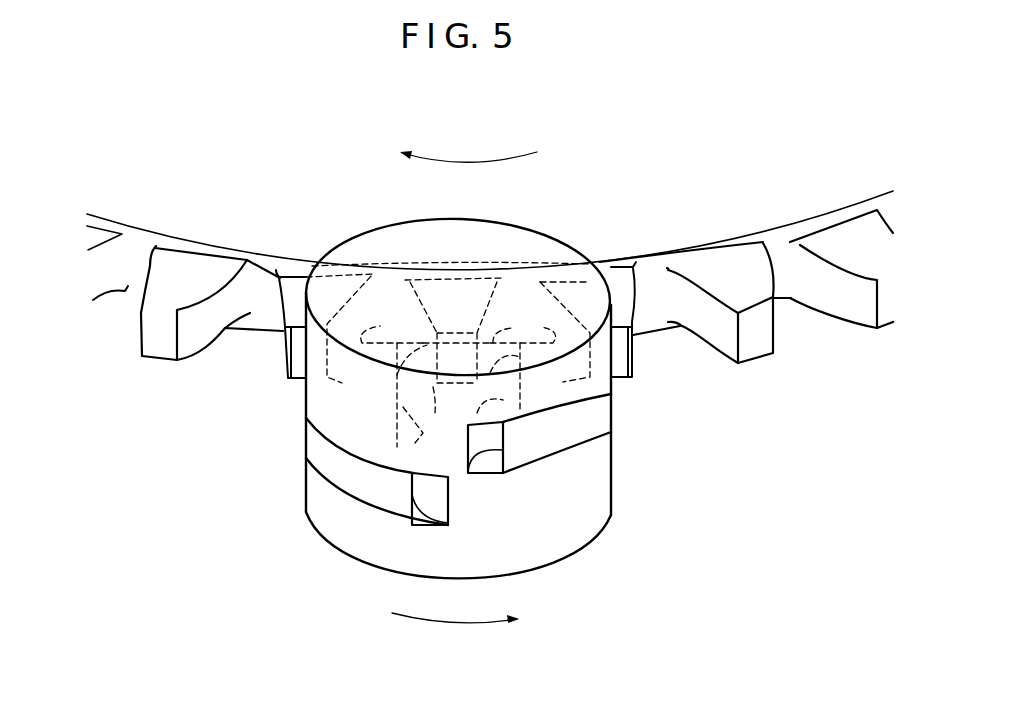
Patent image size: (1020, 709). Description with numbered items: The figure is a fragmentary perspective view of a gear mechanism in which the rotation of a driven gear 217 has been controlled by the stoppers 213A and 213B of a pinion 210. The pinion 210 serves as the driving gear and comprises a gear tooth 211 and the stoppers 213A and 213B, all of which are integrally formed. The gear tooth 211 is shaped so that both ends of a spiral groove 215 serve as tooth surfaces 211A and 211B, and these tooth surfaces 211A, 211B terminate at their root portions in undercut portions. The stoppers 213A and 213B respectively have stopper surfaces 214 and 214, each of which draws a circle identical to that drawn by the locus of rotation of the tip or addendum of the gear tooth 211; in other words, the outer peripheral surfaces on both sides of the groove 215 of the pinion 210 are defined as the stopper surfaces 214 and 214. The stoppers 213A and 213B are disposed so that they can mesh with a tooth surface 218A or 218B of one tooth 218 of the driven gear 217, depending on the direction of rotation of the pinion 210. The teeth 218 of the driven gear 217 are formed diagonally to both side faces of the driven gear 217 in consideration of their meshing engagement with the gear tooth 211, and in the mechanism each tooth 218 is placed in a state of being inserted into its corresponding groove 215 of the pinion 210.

The pinion 210 is at (255, 523).
The gear tooth 211 is at (434, 444).
The tooth surface 211A is at (477, 447).
The tooth surface 211B is at (427, 493).
The stopper 213A is at (300, 385).
The stopper 213B is at (597, 510).
The stopper surface 214 is at (305, 400).
The spiral groove 215 is at (577, 424).
The driven gear 217 is at (180, 197).
The tooth 218 is at (475, 300).
The tooth surface 218A is at (213, 298).
The tooth surface 218B is at (703, 313).